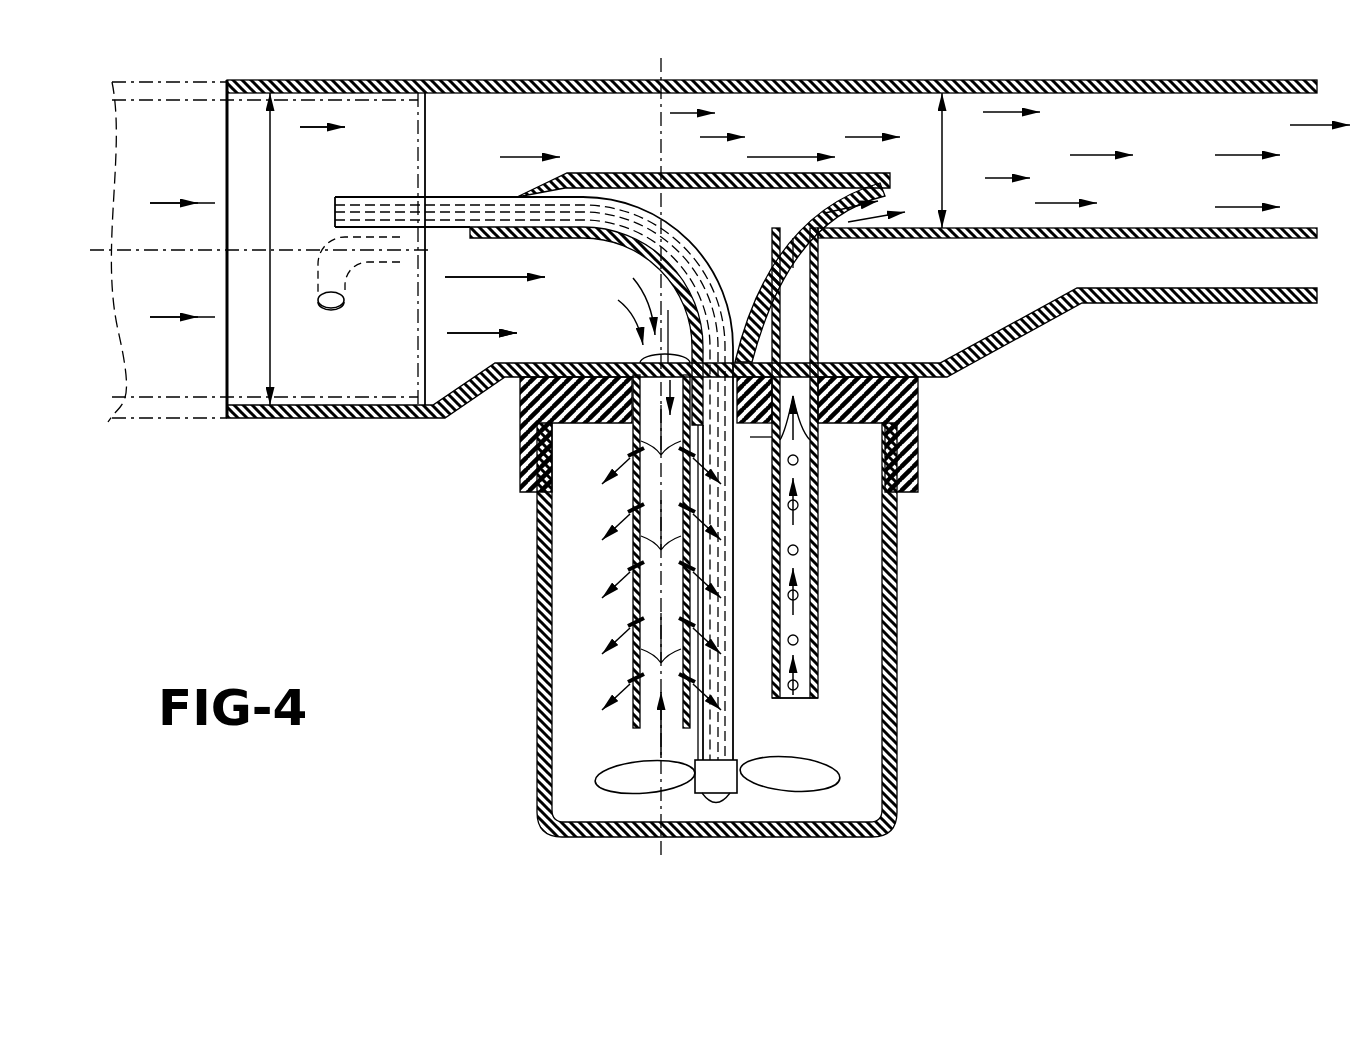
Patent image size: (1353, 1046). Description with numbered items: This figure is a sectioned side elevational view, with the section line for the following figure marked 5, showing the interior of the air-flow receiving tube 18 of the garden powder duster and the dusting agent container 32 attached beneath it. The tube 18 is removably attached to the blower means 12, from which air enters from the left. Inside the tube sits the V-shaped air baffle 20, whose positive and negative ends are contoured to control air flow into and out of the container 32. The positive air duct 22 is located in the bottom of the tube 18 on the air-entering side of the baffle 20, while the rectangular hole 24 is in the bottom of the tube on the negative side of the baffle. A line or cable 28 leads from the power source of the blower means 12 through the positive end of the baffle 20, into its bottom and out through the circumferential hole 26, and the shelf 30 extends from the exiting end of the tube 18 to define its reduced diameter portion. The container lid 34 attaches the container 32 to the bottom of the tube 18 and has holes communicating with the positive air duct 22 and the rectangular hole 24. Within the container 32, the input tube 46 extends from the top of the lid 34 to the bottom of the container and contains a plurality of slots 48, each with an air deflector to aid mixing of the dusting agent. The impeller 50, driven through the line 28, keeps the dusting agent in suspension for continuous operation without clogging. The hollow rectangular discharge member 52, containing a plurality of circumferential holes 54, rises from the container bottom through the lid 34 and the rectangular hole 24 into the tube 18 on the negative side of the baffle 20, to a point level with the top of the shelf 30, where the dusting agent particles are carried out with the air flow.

The section line 5- 5 is at (661, 58).
The blower means 12 is at (152, 455).
The air-flow receiving tube 18 is at (1213, 305).
The air baffle 20 is at (597, 173).
The positive air duct 22 is at (652, 360).
The rectangular hole 24 is at (800, 365).
The circumferential hole 26 is at (748, 318).
The line 28 is at (385, 197).
The shelf 30 is at (970, 240).
The dusting agent container 32 is at (537, 640).
The container lid 34 is at (920, 410).
The input tube 46 is at (633, 705).
The slots 48 is at (633, 567).
The impeller 50 is at (732, 733).
The discharge member 52 is at (812, 682).
The circumferential holes 54 is at (800, 600).